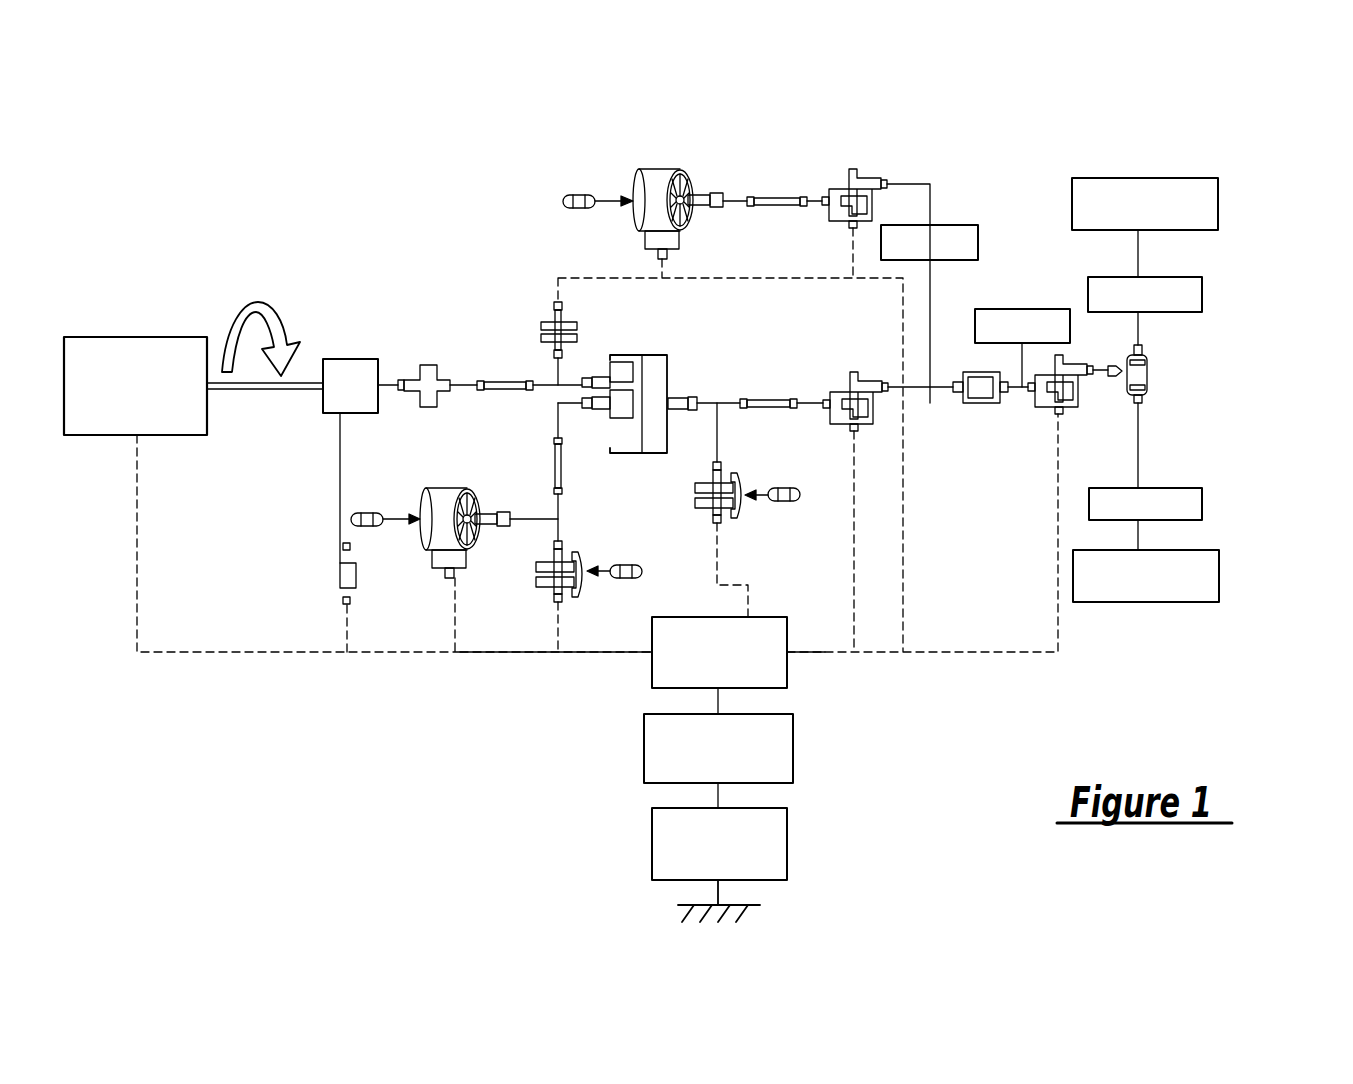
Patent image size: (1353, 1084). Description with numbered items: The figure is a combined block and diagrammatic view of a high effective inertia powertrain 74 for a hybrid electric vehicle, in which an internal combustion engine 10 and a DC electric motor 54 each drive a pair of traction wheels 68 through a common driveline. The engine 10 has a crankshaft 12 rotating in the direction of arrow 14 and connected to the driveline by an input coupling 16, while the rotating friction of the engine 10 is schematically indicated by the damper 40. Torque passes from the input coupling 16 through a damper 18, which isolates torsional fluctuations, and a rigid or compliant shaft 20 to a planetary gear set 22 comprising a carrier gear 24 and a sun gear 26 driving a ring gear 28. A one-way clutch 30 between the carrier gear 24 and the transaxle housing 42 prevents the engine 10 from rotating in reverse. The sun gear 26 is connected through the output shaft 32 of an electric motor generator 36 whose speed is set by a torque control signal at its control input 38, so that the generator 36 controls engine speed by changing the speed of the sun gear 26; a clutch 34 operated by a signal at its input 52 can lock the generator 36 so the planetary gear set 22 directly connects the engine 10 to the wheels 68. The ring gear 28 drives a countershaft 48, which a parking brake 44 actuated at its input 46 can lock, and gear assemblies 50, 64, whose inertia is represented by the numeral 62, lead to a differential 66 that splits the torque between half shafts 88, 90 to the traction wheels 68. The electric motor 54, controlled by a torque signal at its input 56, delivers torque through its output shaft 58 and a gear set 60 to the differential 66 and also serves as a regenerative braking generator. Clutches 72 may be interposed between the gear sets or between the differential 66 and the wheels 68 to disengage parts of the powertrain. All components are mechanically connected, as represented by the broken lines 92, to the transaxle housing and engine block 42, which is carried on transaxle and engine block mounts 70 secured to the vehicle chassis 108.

The internal combustion engine 10 is at (137, 337).
The crankshaft 12 is at (258, 392).
The arrow 14 is at (255, 303).
The input coupling 16 is at (350, 359).
The damper 18 is at (427, 365).
The shaft 20 is at (505, 381).
The planetary gear set 22 is at (680, 357).
The carrier gear 24 is at (600, 371).
The sun gear 26 is at (605, 420).
The ring gear 28 is at (678, 397).
The one-way clutch 30 is at (552, 320).
The output shaft 32 is at (553, 462).
The clutch 34 is at (566, 546).
The electric motor generator 36 is at (450, 488).
The control input 38 is at (368, 513).
The damper 40 is at (340, 575).
The transaxle housing and ICE engine block 42 is at (790, 676).
The parking brake 44 is at (735, 520).
The input 46 is at (793, 485).
The countershaft 48 is at (767, 399).
The gear assembly 50 is at (836, 382).
The input 52 is at (626, 580).
The DC electric motor 54 is at (660, 169).
The input 56 is at (580, 195).
The output shaft 58 is at (780, 197).
The gear set 60 is at (838, 172).
The inertia 62 is at (977, 403).
The gear assembly 64 is at (1046, 415).
The differential 66 is at (1150, 374).
The traction wheels 68 is at (1148, 178).
The transaxle and engine block mounts 70 is at (795, 750).
The clutch 72 is at (960, 225).
The powertrain 74 is at (475, 170).
The half shaft 88 is at (1140, 250).
The half shaft 90 is at (1140, 534).
The broken lines 92 is at (843, 258).
The vehicle chassis 108 is at (790, 840).